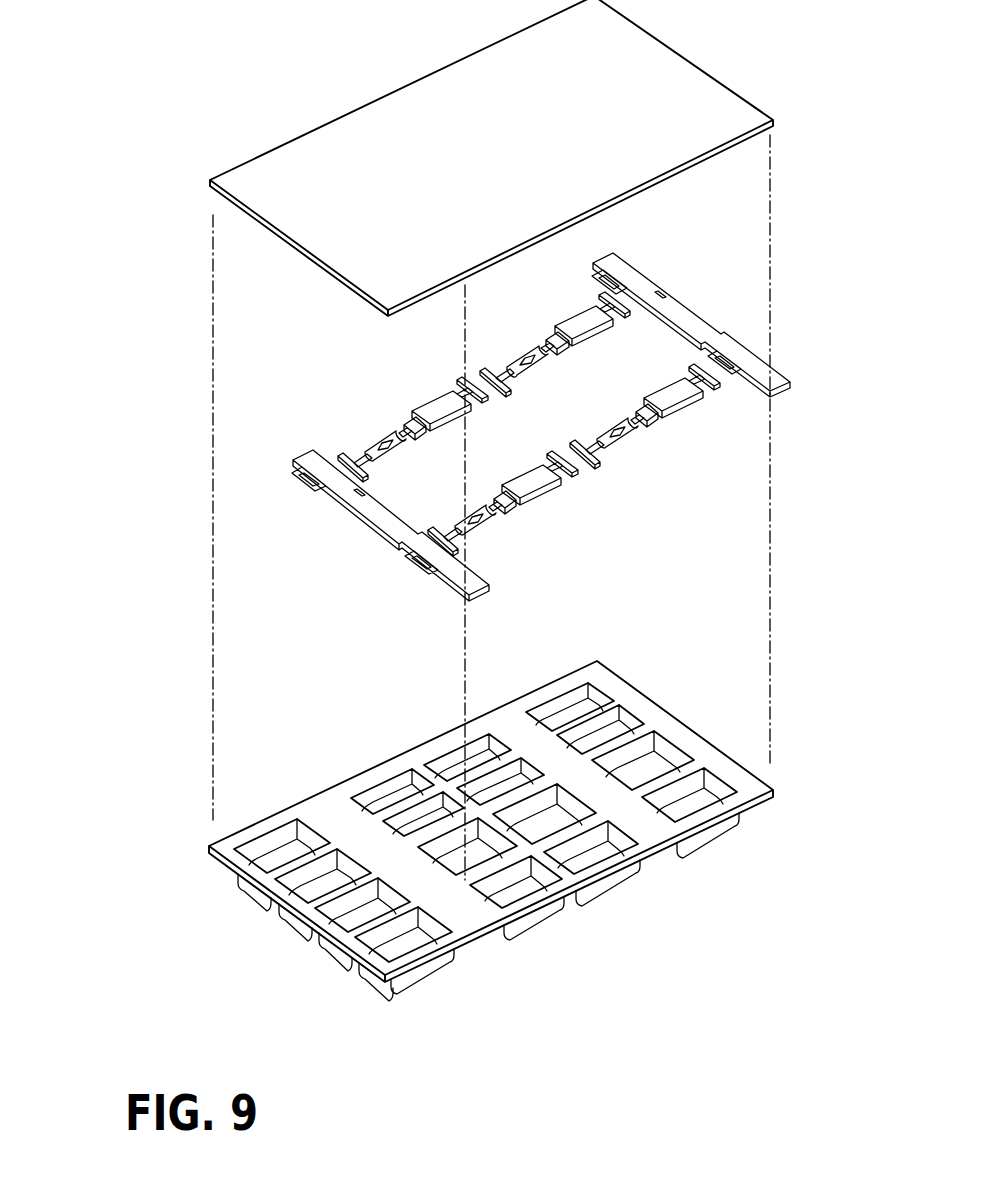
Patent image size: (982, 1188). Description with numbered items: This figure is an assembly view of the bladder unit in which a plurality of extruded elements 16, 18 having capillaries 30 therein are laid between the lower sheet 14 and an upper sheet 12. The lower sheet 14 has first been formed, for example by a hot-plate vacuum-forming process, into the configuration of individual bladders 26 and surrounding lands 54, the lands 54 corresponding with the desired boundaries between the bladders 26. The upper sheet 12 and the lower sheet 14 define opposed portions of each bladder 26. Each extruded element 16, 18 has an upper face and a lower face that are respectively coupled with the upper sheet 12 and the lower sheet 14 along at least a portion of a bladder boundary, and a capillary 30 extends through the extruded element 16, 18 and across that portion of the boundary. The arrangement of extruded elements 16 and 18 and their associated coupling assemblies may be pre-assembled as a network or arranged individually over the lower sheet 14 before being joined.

The upper sheet 12 is at (340, 155).
The lower sheet 14 is at (175, 872).
The extruded element 16 is at (687, 305).
The extruded element 18 is at (438, 403).
The bladder 26 is at (633, 720).
The capillary 30 is at (388, 420).
The lands 54 is at (532, 743).